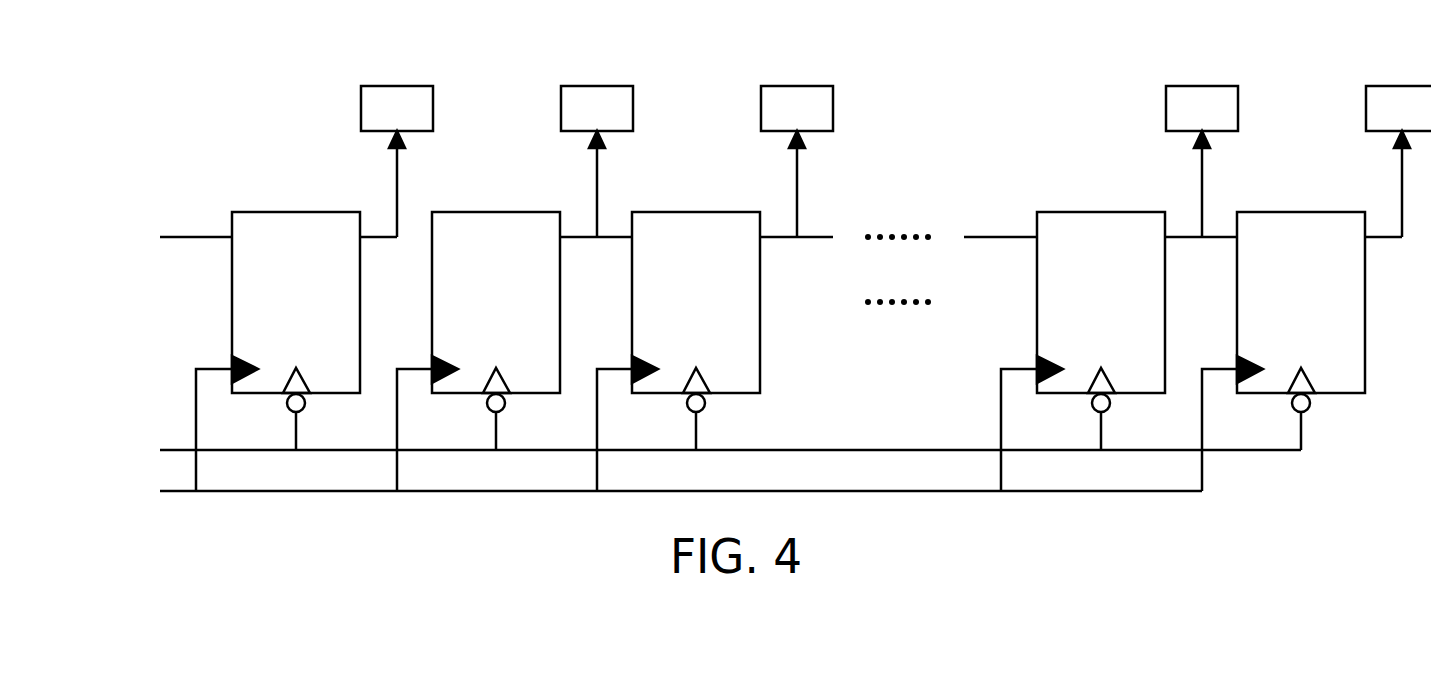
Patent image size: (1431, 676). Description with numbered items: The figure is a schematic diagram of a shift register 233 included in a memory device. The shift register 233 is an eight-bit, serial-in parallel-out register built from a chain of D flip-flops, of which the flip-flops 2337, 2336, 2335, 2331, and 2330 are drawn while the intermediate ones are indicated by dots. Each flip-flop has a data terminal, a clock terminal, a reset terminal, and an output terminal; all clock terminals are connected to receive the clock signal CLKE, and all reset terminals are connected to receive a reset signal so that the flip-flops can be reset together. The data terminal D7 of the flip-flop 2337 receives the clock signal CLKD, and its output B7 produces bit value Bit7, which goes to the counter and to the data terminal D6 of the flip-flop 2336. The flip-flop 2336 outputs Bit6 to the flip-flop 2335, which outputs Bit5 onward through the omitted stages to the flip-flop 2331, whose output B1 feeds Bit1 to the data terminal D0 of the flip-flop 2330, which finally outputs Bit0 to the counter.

The shift register 233 is at (131, 43).
The flip-flop 2337 is at (297, 212).
The flip-flop 2336 is at (497, 212).
The flip-flop 2335 is at (697, 212).
The flip-flop 2331 is at (1100, 212).
The flip-flop 2330 is at (1302, 212).